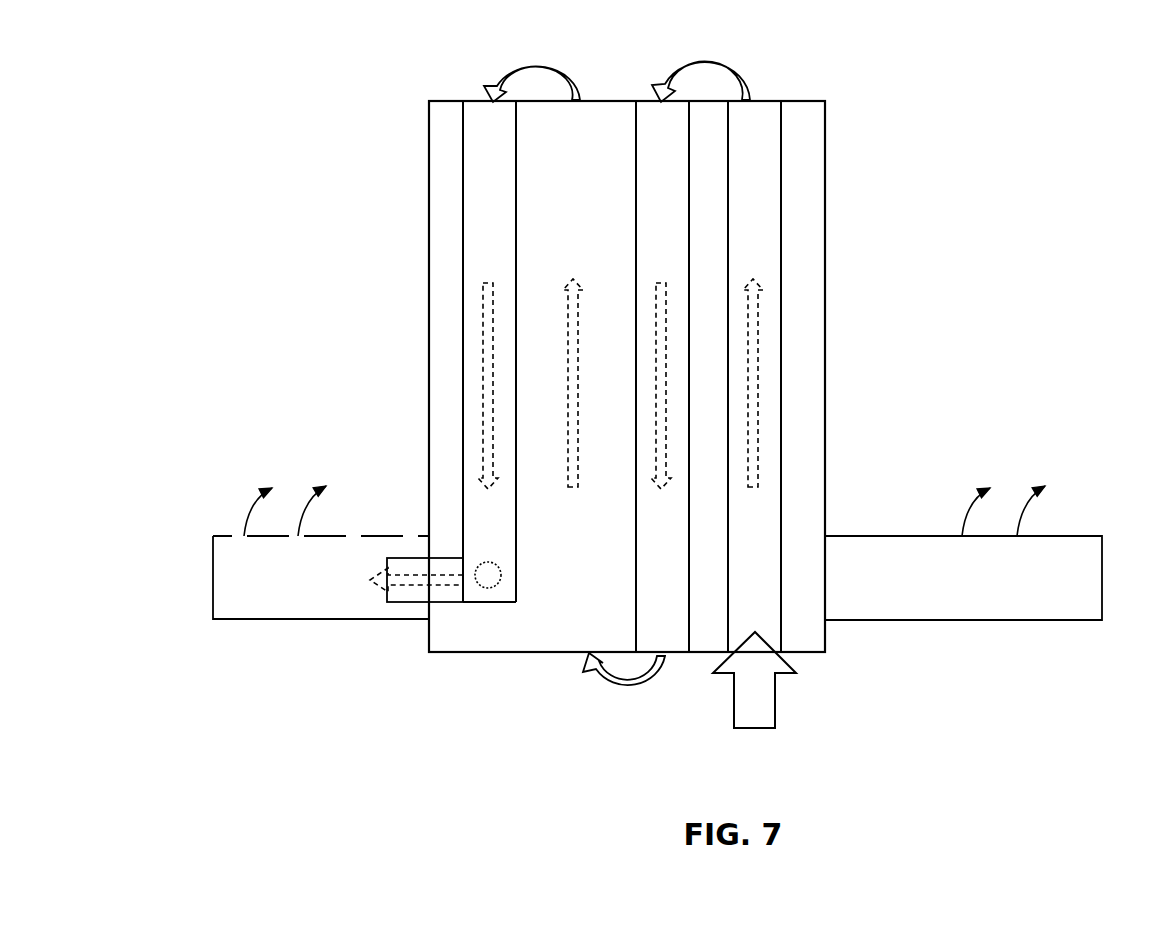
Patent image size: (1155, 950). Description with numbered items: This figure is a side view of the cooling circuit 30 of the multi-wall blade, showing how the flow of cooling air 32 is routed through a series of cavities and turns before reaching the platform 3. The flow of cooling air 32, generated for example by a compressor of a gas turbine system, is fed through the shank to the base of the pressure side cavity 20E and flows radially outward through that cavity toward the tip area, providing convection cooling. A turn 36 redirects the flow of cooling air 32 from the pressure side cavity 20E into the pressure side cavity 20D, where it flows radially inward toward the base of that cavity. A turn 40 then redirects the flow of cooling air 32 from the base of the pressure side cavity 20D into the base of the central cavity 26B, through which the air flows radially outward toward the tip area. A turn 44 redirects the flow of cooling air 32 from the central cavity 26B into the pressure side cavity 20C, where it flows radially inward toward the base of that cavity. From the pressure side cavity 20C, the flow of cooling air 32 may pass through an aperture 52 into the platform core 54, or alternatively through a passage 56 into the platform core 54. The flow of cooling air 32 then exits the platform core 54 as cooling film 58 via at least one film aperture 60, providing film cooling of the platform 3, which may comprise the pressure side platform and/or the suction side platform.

The cooling circuit 30 is at (262, 186).
The central cavity 26B is at (825, 168).
The pressure side cavity 20C is at (523, 351).
The pressure side cavity 20D is at (661, 349).
The pressure side cavity 20E is at (752, 348).
The turn 44 is at (571, 76).
The turn 36 is at (742, 70).
The turn 40 is at (601, 690).
The flow of cooling air 32 is at (382, 633).
The platform core 54 is at (657, 578).
The passage 56 is at (418, 604).
The aperture 52 is at (488, 590).
The cooling film 58 is at (294, 482).
The platform 3 is at (386, 536).
The film aperture 60 is at (291, 551).